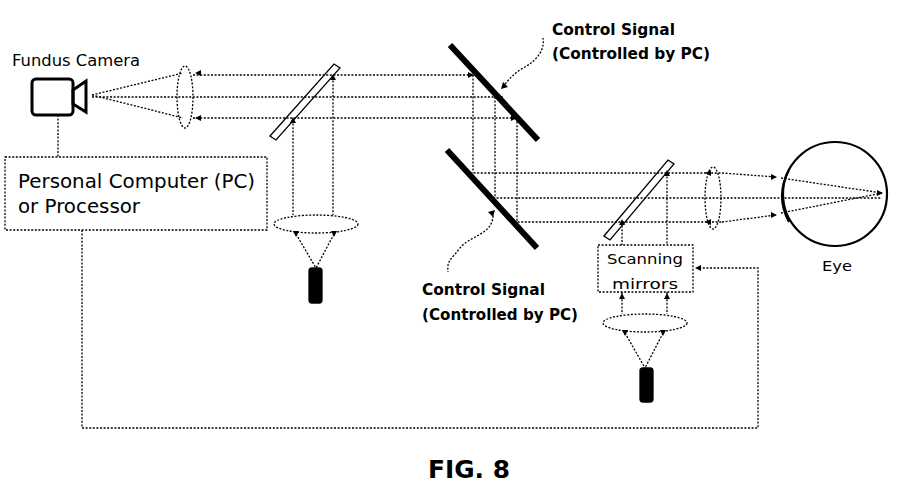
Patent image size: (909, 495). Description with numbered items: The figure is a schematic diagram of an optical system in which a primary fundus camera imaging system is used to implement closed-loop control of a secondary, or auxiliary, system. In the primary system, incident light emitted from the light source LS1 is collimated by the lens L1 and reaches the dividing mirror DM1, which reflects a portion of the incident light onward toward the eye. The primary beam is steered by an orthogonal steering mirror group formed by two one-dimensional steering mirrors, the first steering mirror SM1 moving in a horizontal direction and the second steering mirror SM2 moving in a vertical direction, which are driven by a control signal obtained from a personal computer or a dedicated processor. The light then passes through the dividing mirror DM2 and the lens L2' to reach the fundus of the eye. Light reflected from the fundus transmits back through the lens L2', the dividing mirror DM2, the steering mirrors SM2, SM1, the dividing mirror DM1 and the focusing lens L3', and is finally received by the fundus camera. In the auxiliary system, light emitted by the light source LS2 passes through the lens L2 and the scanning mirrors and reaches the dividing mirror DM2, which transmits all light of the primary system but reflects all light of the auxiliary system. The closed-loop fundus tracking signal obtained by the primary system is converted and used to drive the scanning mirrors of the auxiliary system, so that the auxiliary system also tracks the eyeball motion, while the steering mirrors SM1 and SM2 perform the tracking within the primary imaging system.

The focusing lens L3' is at (186, 87).
The dividing mirror DM1 is at (314, 92).
The first steering mirror SM1 is at (520, 100).
The second steering mirror SM2 is at (515, 205).
The dividing mirror DM2 is at (645, 192).
The lens L2' is at (716, 189).
The lens L1 is at (330, 224).
The light source LS1 is at (333, 285).
The lens L2 is at (660, 323).
The light source LS2 is at (665, 385).